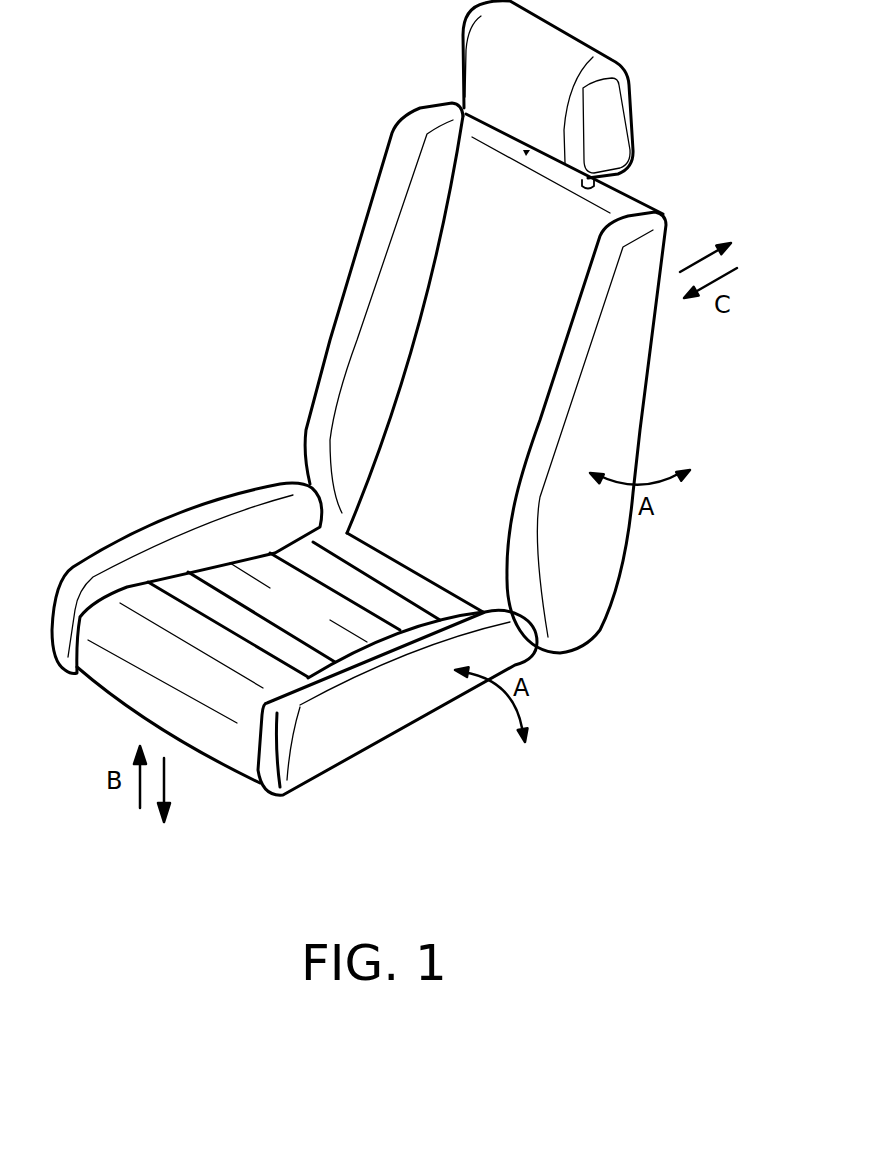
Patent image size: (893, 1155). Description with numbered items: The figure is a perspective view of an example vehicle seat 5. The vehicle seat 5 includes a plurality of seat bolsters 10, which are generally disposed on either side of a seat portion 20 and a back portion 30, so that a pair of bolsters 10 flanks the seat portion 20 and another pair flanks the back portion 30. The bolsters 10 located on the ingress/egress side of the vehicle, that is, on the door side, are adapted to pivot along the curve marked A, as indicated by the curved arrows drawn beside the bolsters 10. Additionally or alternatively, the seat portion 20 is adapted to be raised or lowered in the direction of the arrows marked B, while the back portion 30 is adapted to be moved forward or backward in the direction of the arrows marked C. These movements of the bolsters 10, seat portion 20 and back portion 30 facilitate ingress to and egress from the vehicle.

The vehicle seat 5 is at (216, 69).
The seat bolsters 10 is at (362, 278).
The seat portion 20 is at (315, 619).
The back portion 30 is at (520, 302).